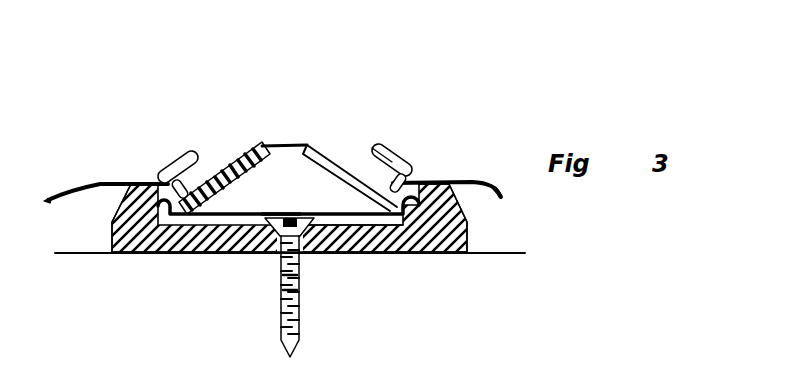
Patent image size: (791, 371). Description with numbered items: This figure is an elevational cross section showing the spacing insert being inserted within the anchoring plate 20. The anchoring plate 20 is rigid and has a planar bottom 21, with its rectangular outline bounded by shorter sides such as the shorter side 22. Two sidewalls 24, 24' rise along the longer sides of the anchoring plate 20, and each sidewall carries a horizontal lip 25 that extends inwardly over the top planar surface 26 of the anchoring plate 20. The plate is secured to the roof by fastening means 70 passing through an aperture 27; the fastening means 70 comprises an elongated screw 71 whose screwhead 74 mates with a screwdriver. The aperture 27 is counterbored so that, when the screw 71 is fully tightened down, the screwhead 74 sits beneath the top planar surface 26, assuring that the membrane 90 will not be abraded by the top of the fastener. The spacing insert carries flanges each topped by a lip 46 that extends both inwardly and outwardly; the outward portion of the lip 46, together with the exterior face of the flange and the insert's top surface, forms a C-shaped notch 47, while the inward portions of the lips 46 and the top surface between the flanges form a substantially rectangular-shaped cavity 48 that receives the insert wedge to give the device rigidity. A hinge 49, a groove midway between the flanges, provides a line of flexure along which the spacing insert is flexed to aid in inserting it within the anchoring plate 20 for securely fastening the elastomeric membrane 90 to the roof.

The anchoring plate 20 is at (474, 211).
The planar bottom 21 is at (190, 255).
The shorter side 22 is at (400, 253).
The sidewall 24 is at (467, 246).
The sidewall 24' is at (114, 254).
The horizontal lip 25 is at (127, 182).
The top planar surface 26 is at (236, 212).
The aperture 27 is at (256, 245).
The lip 46 is at (181, 153).
The C-shaped notch 47 is at (390, 148).
The rectangular-shaped cavity 48 is at (352, 162).
The hinge 49 is at (287, 145).
The fastening means 70 is at (276, 329).
The screw 71 is at (300, 283).
The screwhead 74 is at (283, 212).
The membrane 90 is at (503, 196).